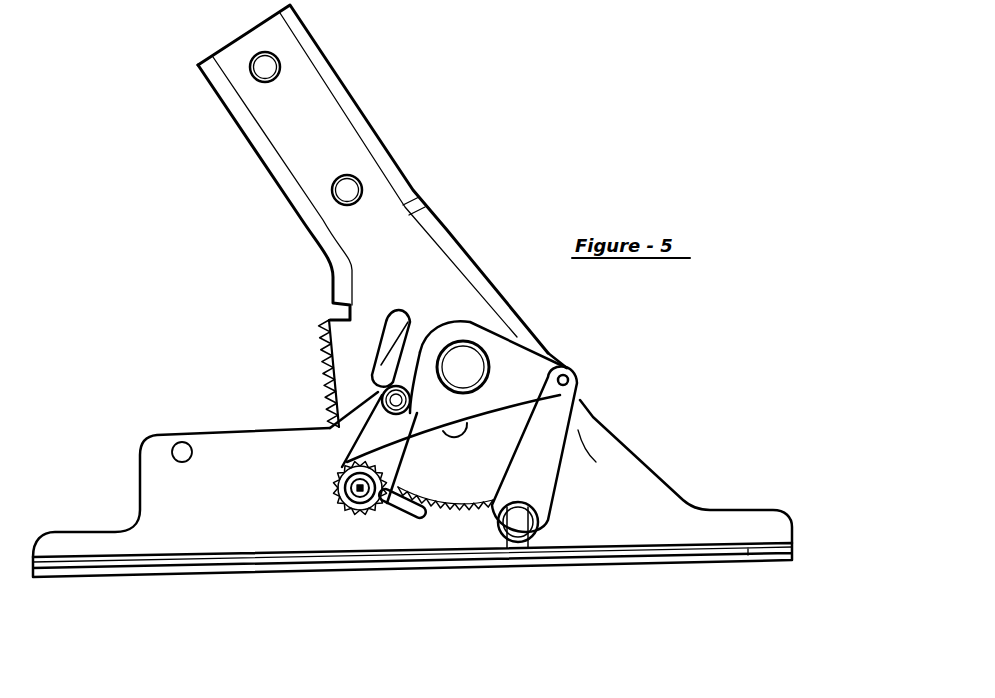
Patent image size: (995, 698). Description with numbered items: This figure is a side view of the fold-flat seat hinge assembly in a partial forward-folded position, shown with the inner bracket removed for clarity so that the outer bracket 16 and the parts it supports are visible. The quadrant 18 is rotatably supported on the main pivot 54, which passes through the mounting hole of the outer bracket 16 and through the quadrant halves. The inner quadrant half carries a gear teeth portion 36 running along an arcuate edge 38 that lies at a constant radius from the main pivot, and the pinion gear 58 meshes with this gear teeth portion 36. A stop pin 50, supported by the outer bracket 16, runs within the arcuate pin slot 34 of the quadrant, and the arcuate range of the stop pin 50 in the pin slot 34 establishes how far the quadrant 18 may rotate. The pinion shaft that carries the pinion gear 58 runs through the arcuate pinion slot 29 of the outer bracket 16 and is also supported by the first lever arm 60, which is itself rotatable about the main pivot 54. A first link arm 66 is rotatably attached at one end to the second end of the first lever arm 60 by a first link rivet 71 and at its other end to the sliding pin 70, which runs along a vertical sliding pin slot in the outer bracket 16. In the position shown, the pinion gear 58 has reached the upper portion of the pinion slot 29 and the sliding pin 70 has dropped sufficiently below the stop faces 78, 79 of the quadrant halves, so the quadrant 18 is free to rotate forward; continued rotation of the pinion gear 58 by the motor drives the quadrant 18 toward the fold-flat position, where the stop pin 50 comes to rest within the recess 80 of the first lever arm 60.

The outer bracket 16 is at (230, 442).
The quadrant 18 is at (387, 143).
The pinion slot 29 is at (410, 517).
The pin slot 34 is at (395, 315).
The gear teeth portion 36 is at (327, 327).
The arcuate edge 38 is at (327, 350).
The stop pin 50 is at (330, 407).
The main pivot 54 is at (470, 372).
The pinion gear 58 is at (330, 510).
The first lever arm 60 is at (532, 335).
The first link arm 66 is at (573, 403).
The sliding pin 70 is at (513, 522).
The first link rivet 71 is at (568, 380).
The stop face 78 is at (685, 471).
The stop face 79 is at (590, 413).
The recess 80 is at (415, 413).